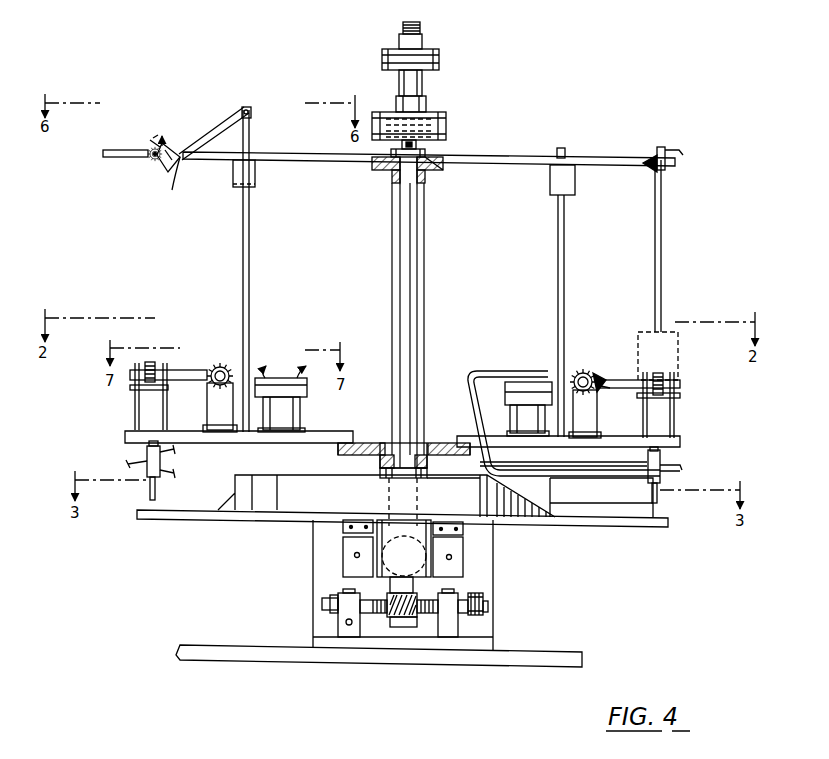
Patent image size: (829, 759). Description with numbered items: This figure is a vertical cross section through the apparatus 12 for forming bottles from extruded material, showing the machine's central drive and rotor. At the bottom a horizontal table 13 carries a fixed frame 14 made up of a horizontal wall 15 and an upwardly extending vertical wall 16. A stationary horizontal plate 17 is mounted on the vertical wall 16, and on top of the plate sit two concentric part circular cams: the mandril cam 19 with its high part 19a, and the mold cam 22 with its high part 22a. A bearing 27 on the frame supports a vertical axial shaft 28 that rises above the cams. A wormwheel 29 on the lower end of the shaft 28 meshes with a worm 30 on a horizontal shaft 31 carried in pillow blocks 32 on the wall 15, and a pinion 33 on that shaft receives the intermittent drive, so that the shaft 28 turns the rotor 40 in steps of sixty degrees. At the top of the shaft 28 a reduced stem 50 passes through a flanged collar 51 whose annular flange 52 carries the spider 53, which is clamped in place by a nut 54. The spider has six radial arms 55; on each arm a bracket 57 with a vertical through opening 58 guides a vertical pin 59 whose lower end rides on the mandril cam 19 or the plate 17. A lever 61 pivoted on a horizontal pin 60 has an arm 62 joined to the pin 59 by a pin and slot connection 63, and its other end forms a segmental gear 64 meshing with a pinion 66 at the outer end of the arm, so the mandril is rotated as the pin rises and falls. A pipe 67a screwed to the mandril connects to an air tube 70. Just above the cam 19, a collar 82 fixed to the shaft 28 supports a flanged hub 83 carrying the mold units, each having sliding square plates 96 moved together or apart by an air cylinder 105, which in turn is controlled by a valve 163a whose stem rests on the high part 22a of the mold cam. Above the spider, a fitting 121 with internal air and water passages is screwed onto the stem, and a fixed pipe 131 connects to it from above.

The apparatus 12 is at (188, 695).
The horizontal table 13 is at (580, 660).
The fixed frame 14 is at (292, 571).
The horizontal wall 15 is at (482, 643).
The vertical wall 16 is at (485, 537).
The stationary horizontal plate 17 is at (176, 514).
The mandril cam 19 is at (301, 476).
The high part 19a is at (446, 477).
The mold cam 22 is at (578, 501).
The high part 22a is at (608, 504).
The bearing 27 is at (414, 560).
The vertical axial shaft 28 is at (425, 295).
The wormwheel 29 is at (425, 622).
The worm 30 is at (388, 622).
The horizontal shaft 31 is at (321, 604).
The pillow blocks 32 is at (343, 627).
The pinion 33 is at (478, 617).
The rotor 40 is at (681, 253).
The stem 50 is at (408, 184).
The flanged collar 51 is at (380, 166).
The annular horizontal flange 52 is at (426, 180).
The spider 53 is at (440, 160).
The nut 54 is at (426, 153).
The radial arm 55 is at (308, 160).
The bracket 57 is at (233, 178).
The vertical through opening 58 is at (256, 186).
The vertical pin 59 is at (250, 266).
The horizontal pin 60 is at (178, 162).
The lever 61 is at (175, 144).
The lever arm 62 is at (228, 118).
The pin and slot connection 63 is at (244, 104).
The segmental gear 64 is at (166, 172).
The pinion 66 is at (150, 160).
The pipe 67a is at (118, 150).
The air tube 70 is at (152, 142).
The collar 82 is at (379, 476).
The flanged hub 83 is at (364, 438).
The square plates 96 is at (131, 387).
The air cylinder 105 is at (282, 360).
The fitting 121 is at (434, 110).
The fixed pipe 131 is at (421, 43).
The valve 163a is at (165, 462).